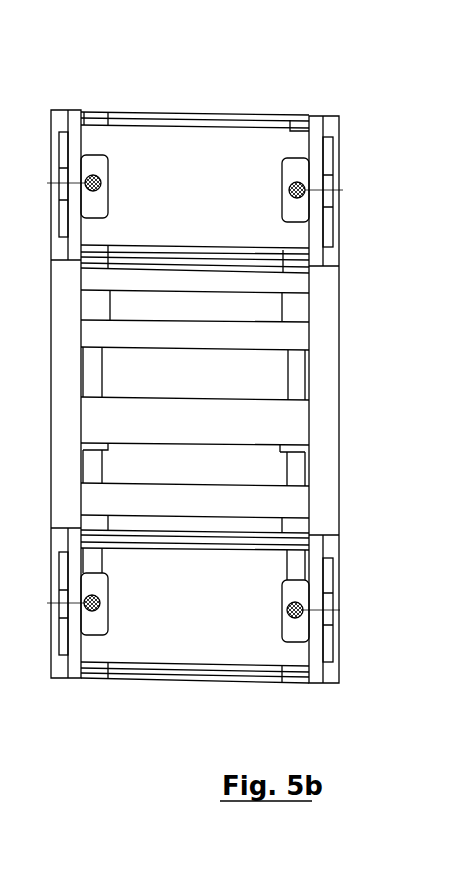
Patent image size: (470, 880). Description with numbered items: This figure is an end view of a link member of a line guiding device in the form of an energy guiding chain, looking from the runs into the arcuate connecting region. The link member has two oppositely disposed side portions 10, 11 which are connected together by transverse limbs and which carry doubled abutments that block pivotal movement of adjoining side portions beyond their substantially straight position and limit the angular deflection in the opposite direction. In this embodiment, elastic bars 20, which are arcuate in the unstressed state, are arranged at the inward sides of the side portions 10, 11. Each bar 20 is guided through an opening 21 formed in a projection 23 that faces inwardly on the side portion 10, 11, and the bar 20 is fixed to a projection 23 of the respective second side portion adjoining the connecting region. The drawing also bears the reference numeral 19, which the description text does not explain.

The side portion 10 is at (30, 254).
The side portion 11 is at (351, 256).
The rail 19 is at (189, 98).
The elastic bar 20 is at (99, 189).
The opening 21 is at (92, 176).
The projection 23 is at (281, 170).